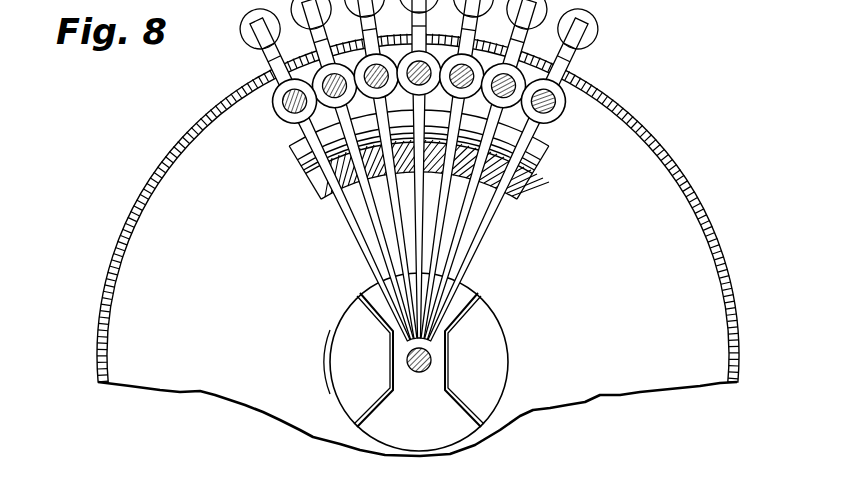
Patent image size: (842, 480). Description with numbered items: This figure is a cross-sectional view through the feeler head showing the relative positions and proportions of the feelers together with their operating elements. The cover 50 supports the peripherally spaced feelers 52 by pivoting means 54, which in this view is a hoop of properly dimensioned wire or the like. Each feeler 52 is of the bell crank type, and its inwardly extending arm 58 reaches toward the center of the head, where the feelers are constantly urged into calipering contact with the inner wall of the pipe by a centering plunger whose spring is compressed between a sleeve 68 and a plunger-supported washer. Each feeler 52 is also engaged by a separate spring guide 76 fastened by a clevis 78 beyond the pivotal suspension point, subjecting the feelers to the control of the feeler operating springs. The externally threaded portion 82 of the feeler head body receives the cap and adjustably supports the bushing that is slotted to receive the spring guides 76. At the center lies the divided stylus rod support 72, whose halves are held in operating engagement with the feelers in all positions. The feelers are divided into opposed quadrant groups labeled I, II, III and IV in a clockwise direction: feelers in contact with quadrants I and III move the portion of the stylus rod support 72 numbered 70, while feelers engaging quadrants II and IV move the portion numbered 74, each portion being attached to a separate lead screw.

The cover 50 is at (684, 182).
The feelers 52 is at (572, 57).
The pivoting means 54 is at (541, 160).
The inwardly extending arm 58 is at (485, 232).
The sleeve 68 is at (418, 414).
The stylus rod support portion 70 is at (487, 348).
The stylus rod support 72 is at (326, 370).
The stylus rod support portion 74 is at (437, 417).
The spring guide 76 is at (557, 117).
The clevis 78 is at (278, 108).
The externally threaded portion 82 is at (417, 431).
The quadrant I is at (345, 337).
The quadrant II is at (463, 297).
The quadrant III is at (495, 362).
The quadrant IV is at (388, 427).